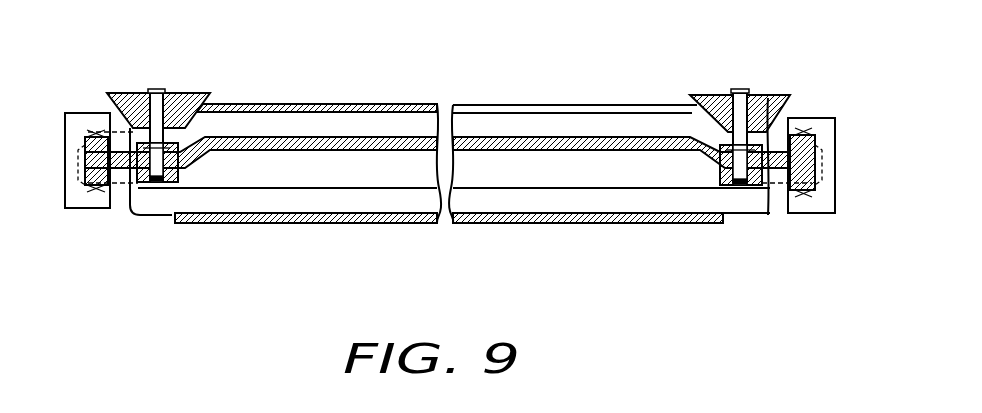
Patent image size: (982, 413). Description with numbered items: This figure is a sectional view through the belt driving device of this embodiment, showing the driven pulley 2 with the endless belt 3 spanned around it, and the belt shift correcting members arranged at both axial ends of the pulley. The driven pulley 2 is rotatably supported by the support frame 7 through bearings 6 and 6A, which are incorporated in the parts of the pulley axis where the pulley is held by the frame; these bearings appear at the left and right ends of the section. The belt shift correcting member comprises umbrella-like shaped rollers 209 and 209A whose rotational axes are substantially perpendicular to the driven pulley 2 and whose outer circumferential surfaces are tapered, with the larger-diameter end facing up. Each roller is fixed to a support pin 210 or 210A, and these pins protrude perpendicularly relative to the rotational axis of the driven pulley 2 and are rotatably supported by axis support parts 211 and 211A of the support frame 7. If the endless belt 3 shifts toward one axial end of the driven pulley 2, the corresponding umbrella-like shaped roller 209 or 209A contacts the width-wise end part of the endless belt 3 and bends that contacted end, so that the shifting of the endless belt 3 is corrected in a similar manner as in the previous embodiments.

The driven pulley 2 is at (733, 220).
The endless belt 3 is at (620, 225).
The bearing 6 is at (100, 197).
The bearing 6A is at (815, 138).
The support frame 7 is at (577, 136).
The umbrella-like shaped roller 209 is at (196, 90).
The umbrella-like shaped roller 209A is at (787, 107).
The support pin 210 is at (159, 90).
The support pin 210A is at (740, 90).
The axis support part 211 is at (172, 183).
The axis support part 211A is at (753, 185).